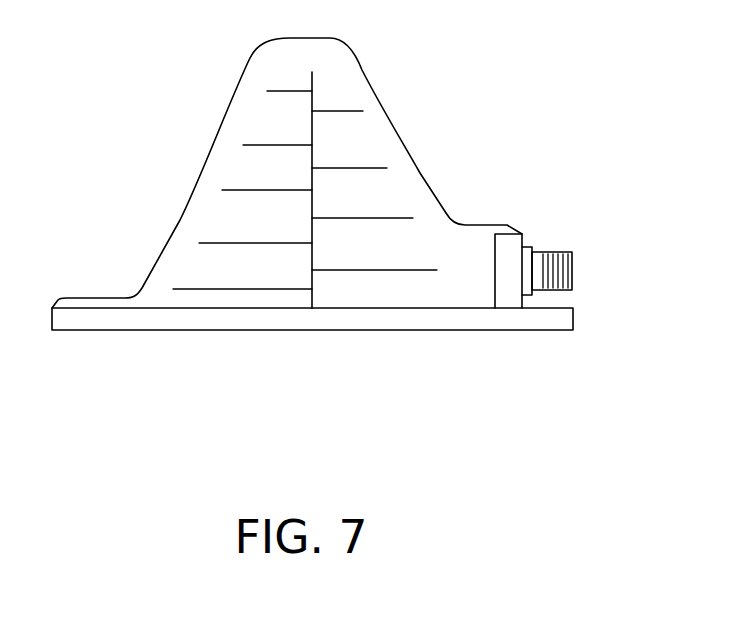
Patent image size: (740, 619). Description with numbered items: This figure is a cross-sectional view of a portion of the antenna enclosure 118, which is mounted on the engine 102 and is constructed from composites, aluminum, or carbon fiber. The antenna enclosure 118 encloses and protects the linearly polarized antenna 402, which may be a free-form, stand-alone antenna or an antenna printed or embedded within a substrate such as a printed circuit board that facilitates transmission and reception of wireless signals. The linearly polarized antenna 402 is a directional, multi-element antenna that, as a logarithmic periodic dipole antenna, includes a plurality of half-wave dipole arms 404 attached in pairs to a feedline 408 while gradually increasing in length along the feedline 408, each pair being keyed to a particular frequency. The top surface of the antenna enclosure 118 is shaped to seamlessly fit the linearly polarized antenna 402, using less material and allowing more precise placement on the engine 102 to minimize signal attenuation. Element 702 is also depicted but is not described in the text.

The engine 102 is at (483, 321).
The antenna enclosure 118 is at (225, 127).
The linearly polarized antenna 402 is at (306, 298).
The half-wave dipole arms 404 is at (415, 270).
The feedline 408 is at (320, 155).
The threaded connector 702 is at (557, 252).